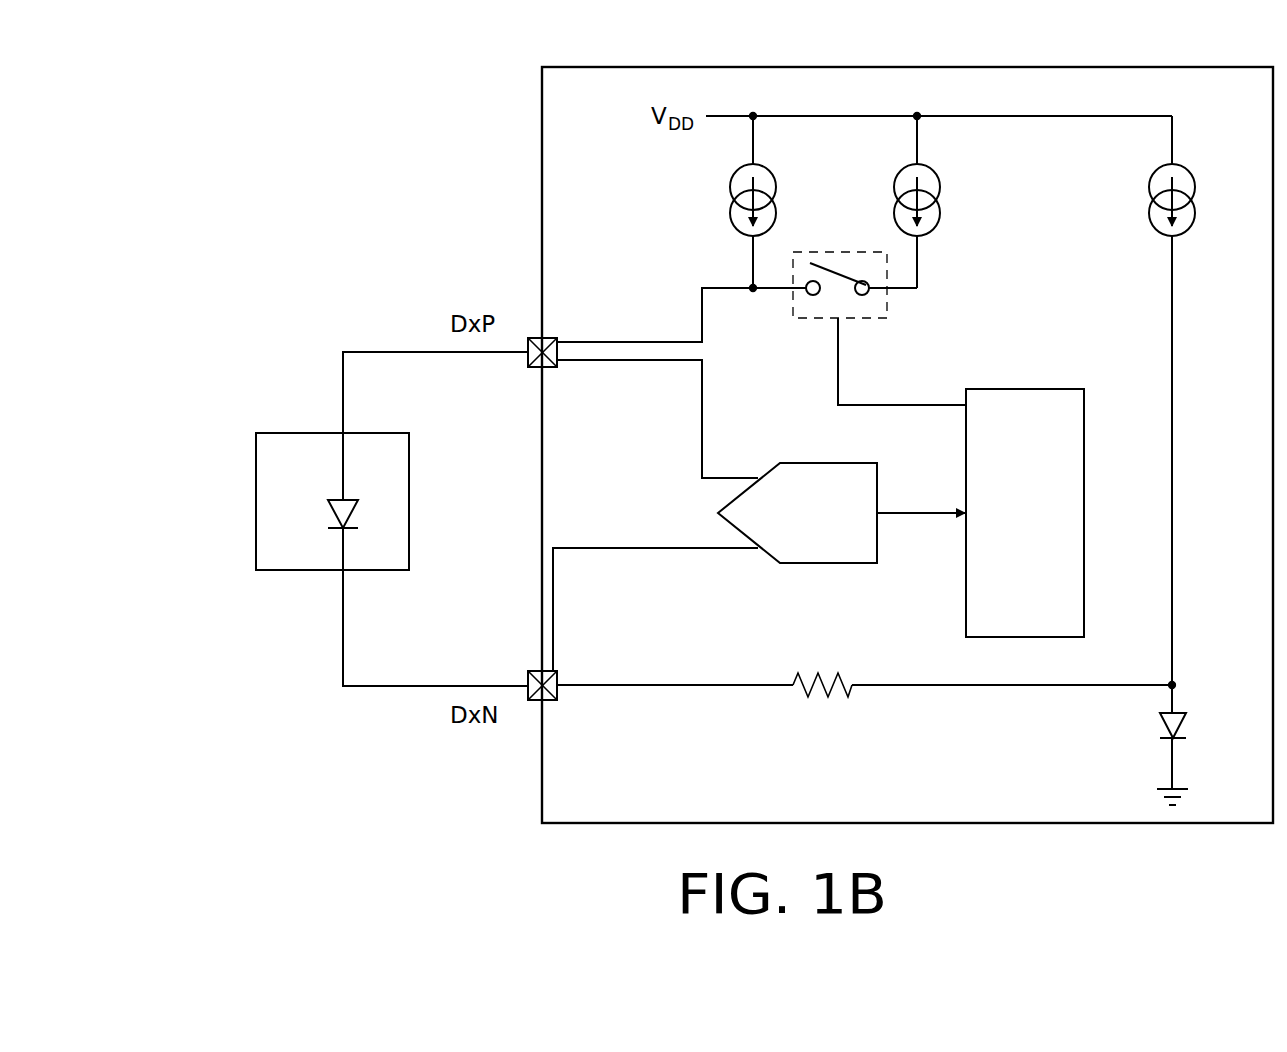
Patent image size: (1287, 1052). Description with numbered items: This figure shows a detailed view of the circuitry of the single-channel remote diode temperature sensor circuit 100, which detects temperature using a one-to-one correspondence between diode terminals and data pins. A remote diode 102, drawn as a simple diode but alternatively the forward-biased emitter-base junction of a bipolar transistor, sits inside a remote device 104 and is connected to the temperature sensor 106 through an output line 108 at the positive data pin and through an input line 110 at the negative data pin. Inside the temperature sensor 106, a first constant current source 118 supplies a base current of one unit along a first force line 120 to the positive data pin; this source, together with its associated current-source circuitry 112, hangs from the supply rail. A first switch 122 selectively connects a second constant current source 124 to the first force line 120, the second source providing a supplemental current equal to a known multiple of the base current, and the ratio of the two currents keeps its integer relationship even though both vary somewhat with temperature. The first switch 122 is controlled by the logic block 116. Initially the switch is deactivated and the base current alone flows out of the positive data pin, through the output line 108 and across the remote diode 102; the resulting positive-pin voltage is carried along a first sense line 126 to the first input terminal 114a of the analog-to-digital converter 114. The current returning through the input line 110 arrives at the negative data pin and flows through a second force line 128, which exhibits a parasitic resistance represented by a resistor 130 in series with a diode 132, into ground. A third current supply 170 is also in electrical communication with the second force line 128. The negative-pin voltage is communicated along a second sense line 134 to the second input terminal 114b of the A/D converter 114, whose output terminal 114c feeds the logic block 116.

The temperature sensor circuit 100 is at (448, 128).
The remote diode 102 is at (340, 497).
The remote device 104 is at (293, 501).
The temperature sensor 106 is at (868, 67).
The output line 108 is at (343, 396).
The input line 110 is at (343, 630).
The current source circuit 112 is at (742, 202).
The analog-to-digital (A/D) converter 114 is at (841, 519).
The first input terminal 114a is at (759, 478).
The second input terminal 114b is at (762, 549).
The output terminal 114c is at (877, 513).
The logic block 116 is at (998, 389).
The first constant current source 118 is at (768, 178).
The first force line 120 is at (598, 342).
The first switch 122 is at (806, 252).
The second constant current source 124 is at (933, 178).
The first sense line 126 is at (702, 418).
The second force line 128 is at (630, 685).
The resistor 130 is at (818, 685).
The diode 132 is at (1178, 713).
The second sense line 134 is at (553, 612).
The third current supply 170 is at (1157, 170).